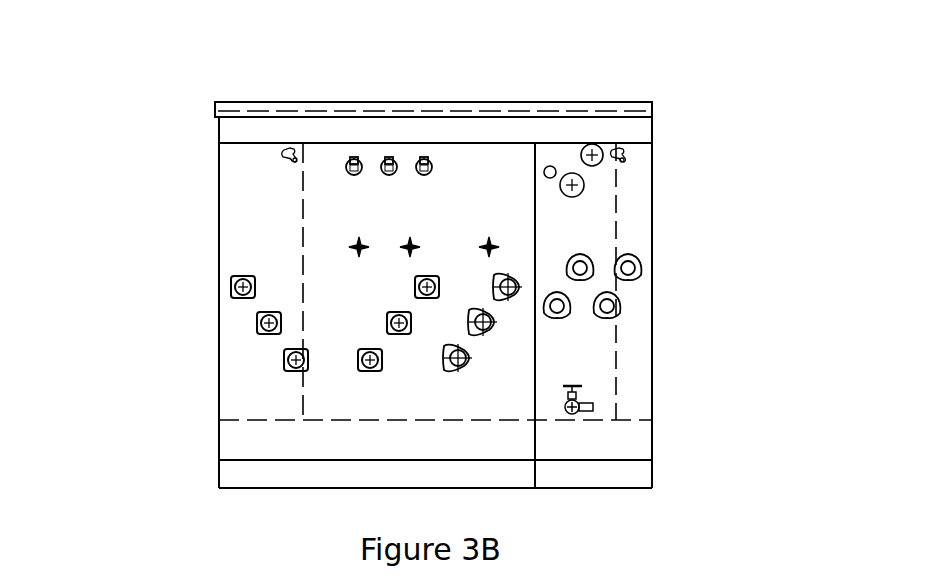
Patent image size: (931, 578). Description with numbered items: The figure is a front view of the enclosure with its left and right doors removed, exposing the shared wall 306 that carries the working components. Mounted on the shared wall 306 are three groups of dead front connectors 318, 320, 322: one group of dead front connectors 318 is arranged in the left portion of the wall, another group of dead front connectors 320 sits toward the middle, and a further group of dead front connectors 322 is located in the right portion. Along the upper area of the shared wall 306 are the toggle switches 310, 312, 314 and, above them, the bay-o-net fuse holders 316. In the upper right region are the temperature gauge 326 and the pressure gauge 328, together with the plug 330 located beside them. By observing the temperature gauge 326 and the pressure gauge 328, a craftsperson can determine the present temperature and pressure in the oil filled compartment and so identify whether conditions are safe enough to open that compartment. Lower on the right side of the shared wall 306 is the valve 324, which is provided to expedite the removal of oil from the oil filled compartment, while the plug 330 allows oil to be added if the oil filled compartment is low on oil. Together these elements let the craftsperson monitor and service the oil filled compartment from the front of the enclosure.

The shared wall 306 is at (322, 265).
The toggle switch 310 is at (348, 242).
The toggle switch 312 is at (403, 238).
The toggle switch 314 is at (489, 240).
The bay-o-net fuse holders 316 is at (422, 155).
The dead front connectors 318 is at (427, 302).
The dead front connectors 320 is at (513, 310).
The dead front connectors 322 is at (585, 293).
The valve 324 is at (583, 403).
The temperature gauge 326 is at (597, 166).
The pressure gauge 328 is at (585, 189).
The plug 330 is at (556, 165).